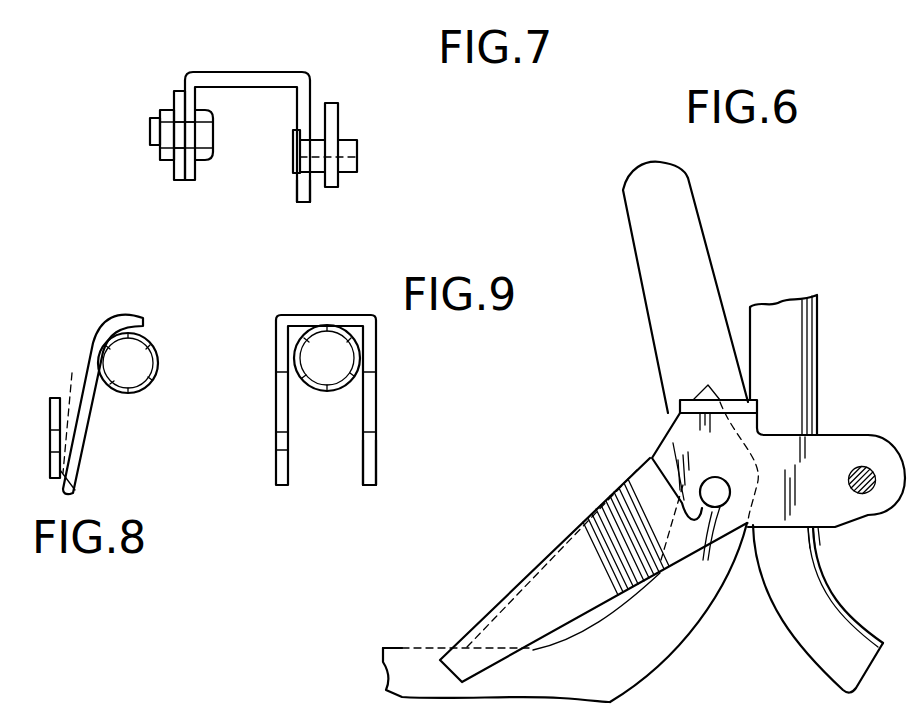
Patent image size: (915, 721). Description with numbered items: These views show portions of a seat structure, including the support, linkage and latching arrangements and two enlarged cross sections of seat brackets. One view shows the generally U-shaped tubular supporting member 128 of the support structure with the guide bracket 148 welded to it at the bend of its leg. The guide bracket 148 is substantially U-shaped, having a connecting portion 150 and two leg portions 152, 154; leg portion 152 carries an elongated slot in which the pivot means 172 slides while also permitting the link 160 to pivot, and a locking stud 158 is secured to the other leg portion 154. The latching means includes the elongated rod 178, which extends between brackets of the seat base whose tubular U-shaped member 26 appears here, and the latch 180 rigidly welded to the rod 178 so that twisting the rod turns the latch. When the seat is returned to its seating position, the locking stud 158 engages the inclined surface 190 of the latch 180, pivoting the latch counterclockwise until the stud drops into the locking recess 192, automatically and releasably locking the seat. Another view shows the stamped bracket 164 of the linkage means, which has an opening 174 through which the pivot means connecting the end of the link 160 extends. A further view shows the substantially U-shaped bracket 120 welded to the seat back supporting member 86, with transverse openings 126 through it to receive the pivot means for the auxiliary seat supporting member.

In FIG. 6, the tubular U-shaped member 26 is at (832, 575).
In FIG. 8, the seat back supporting member 86 is at (160, 368).
In FIG. 9, the seat back supporting member 86 is at (323, 392).
In FIG. 9, the bracket 120 is at (303, 315).
In FIG. 9, the transverse opening 126 is at (372, 447).
In FIG. 6, the tubular supporting member 128 is at (695, 200).
In FIG. 6, the guide bracket 148 is at (557, 540).
In FIG. 7, the connecting portion 150 is at (233, 72).
In FIG. 7, the leg portion 152 is at (197, 172).
In FIG. 7, the leg portion 154 is at (312, 190).
In FIG. 7, the locking stud 158 is at (357, 152).
In FIG. 6, the locking stud 158 is at (707, 495).
In FIG. 8, the link 160 is at (50, 403).
In FIG. 8, the bracket 164 is at (113, 317).
In FIG. 7, the pivot means 172 is at (152, 127).
In FIG. 8, the opening 174 is at (63, 437).
In FIG. 6, the elongated rod 178 is at (853, 466).
In FIG. 7, the latch 180 is at (340, 112).
In FIG. 6, the latch 180 is at (680, 402).
In FIG. 6, the inclined surface 190 is at (667, 480).
In FIG. 6, the locking recess 192 is at (717, 543).